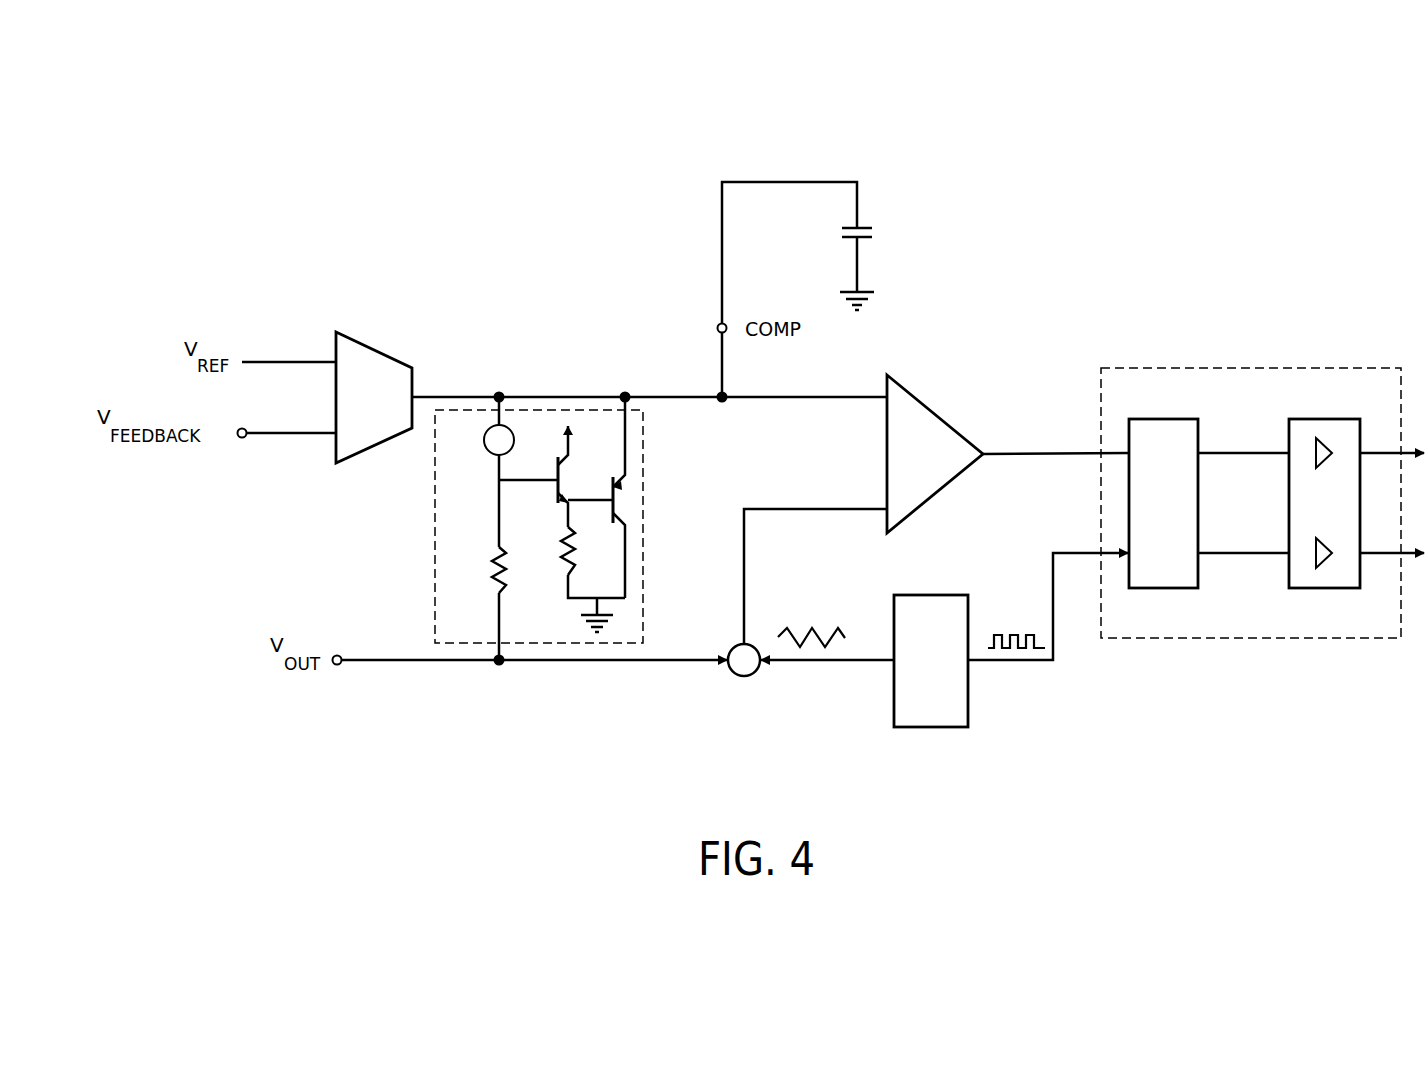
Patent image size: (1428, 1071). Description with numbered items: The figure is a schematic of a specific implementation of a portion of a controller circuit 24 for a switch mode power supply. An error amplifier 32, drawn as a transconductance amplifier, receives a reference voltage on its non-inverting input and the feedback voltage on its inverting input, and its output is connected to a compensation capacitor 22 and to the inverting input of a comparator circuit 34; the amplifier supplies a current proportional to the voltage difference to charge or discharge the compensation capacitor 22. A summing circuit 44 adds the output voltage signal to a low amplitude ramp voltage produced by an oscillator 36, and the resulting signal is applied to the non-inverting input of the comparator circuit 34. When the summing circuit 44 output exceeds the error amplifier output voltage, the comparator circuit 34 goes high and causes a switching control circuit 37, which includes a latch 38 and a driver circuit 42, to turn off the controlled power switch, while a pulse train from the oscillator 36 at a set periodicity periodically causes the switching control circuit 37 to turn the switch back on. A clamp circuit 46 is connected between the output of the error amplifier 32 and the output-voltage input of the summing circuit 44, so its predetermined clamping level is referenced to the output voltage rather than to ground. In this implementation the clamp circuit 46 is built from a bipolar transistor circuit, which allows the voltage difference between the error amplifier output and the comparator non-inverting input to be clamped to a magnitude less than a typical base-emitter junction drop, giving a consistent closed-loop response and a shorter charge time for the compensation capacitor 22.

The compensation capacitor 22 is at (862, 228).
The controller circuit 24 is at (1056, 233).
The error amplifier 32 is at (372, 342).
The comparator circuit 34 is at (938, 418).
The oscillator 36 is at (938, 595).
The switching control circuit 37 is at (1222, 368).
The latch 38 is at (1148, 419).
The driver circuit 42 is at (1308, 419).
The summing circuit 44 is at (749, 677).
The clamp circuit 46 is at (643, 488).